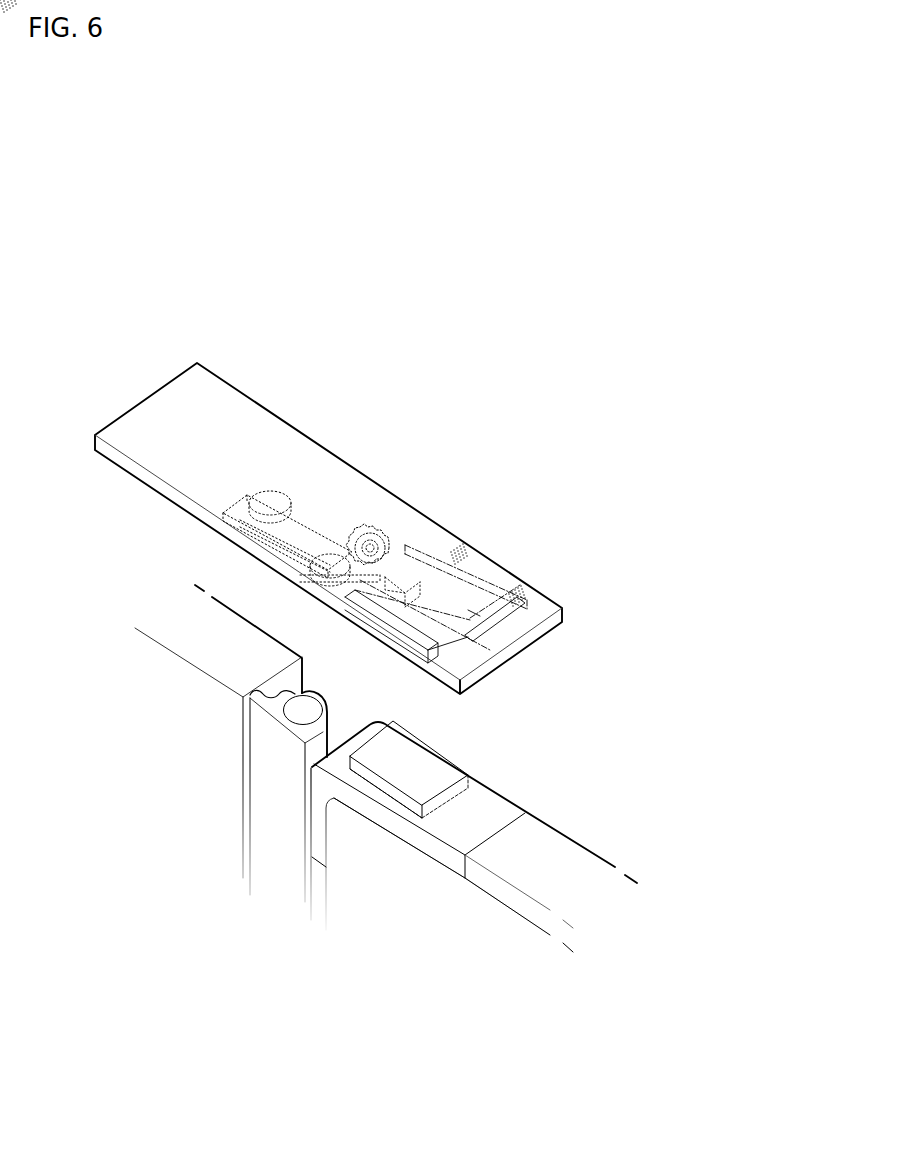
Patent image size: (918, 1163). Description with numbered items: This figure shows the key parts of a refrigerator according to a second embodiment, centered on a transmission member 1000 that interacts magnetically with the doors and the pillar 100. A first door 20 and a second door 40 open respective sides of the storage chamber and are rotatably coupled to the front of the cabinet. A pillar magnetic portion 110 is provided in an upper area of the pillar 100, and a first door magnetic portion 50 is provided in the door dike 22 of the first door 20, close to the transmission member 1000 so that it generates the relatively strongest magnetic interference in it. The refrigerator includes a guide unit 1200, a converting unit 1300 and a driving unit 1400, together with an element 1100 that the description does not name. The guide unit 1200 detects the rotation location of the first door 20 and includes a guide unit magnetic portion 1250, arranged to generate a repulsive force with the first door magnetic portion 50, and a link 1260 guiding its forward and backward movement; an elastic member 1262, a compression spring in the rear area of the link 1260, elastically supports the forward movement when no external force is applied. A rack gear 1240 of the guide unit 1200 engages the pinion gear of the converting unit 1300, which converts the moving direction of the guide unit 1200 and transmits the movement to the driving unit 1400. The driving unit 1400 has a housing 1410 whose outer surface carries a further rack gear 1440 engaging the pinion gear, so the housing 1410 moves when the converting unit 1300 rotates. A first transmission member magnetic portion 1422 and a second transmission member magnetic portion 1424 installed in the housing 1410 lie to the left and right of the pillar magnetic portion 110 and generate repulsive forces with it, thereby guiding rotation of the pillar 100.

The transmission member 1000 is at (328, 516).
The cover plate 1100 is at (242, 404).
The guide unit 1200 is at (286, 331).
The rack gear 1240 is at (407, 543).
The guide unit magnetic portion 1250 is at (470, 610).
The link 1260 is at (445, 640).
The elastic member 1262 is at (513, 588).
The converting unit 1300 is at (380, 528).
The driving unit 1400 is at (195, 524).
The housing 1410 is at (258, 533).
The first transmission member magnetic portion 1422 is at (262, 500).
The second transmission member magnetic portion 1424 is at (330, 558).
The rack gear 1440 is at (373, 570).
The first door 20 is at (474, 852).
The door dike 22 is at (483, 800).
The second door 40 is at (205, 659).
The first door magnetic portion 50 is at (432, 762).
The pillar 100 is at (273, 830).
The pillar magnetic portion 110 is at (297, 715).